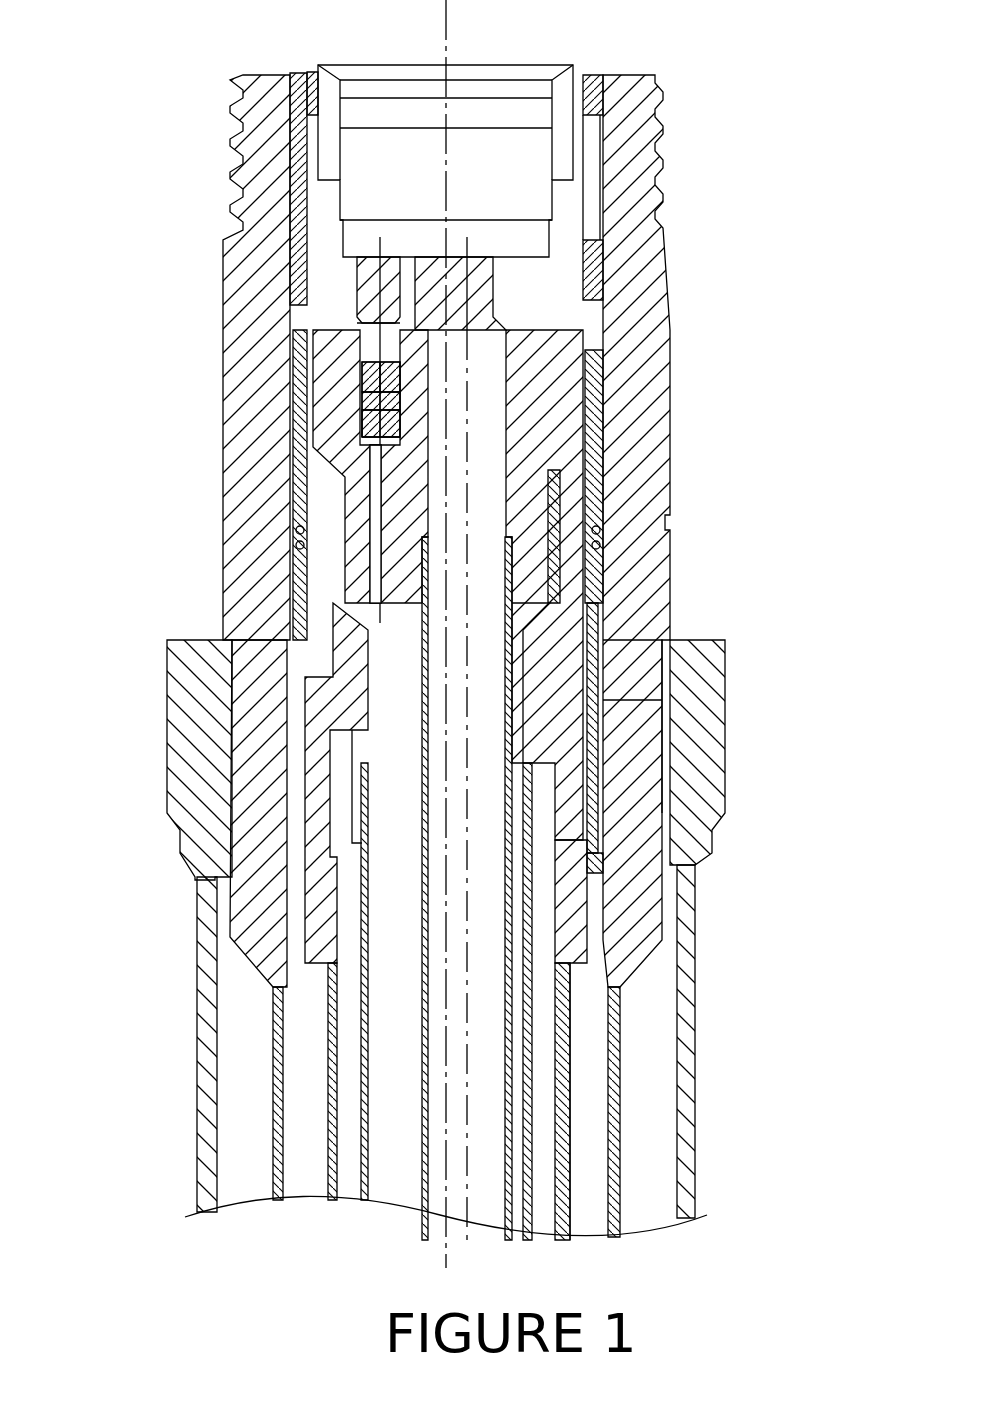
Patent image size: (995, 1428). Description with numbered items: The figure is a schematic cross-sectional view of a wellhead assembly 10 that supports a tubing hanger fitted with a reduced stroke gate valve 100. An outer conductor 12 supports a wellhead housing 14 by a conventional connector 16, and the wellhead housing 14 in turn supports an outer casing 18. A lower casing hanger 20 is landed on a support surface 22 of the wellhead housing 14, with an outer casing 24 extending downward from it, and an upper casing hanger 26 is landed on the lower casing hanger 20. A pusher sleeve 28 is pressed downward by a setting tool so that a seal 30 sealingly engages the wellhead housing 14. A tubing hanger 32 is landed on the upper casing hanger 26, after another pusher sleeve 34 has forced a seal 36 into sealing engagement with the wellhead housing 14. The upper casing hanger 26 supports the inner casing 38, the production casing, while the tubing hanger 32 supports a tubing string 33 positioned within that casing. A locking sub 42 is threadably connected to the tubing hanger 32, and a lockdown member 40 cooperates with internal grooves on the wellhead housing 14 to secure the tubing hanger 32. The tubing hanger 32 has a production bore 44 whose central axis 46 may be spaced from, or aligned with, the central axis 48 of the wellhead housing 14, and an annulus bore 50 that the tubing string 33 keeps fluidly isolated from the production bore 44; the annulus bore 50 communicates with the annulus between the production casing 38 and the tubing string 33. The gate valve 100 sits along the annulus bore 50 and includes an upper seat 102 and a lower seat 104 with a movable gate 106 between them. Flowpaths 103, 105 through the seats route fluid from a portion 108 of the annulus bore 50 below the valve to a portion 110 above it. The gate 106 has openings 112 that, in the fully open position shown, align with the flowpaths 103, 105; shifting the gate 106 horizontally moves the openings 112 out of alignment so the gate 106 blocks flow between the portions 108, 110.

The wellhead assembly 10 is at (777, 303).
The outer conductor 12 is at (690, 990).
The wellhead housing 14 is at (645, 550).
The connector 16 is at (690, 705).
The outer casing 18 is at (614, 1085).
The lower casing hanger 20 is at (595, 880).
The support surface 22 is at (598, 905).
The outer casing 24 is at (565, 1140).
The upper casing hanger 26 is at (560, 610).
The pusher sleeve 28 is at (605, 650).
The seal 30 is at (605, 790).
The tubing hanger 32 is at (548, 340).
The tubing string 33 is at (423, 1167).
The pusher sleeve 34 is at (600, 430).
The seal 36 is at (590, 500).
The inner casing 38 is at (527, 1070).
The lockdown member 40 is at (595, 185).
The locking sub 42 is at (583, 258).
The production bore 44 is at (605, 118).
The central axis 46 is at (465, 290).
The central axis 48 is at (440, 153).
The annulus bore 50 is at (375, 480).
The reduced stroke gate valve 100 is at (352, 391).
The upper seat 102 is at (362, 365).
The flowpath 103 is at (372, 380).
The lower seat 104 is at (365, 442).
The flowpath 105 is at (357, 432).
The gate 106 is at (362, 418).
The portion of the annulus bore 108 is at (370, 515).
The portion of the annulus bore 110 is at (357, 330).
The openings 112 is at (362, 400).